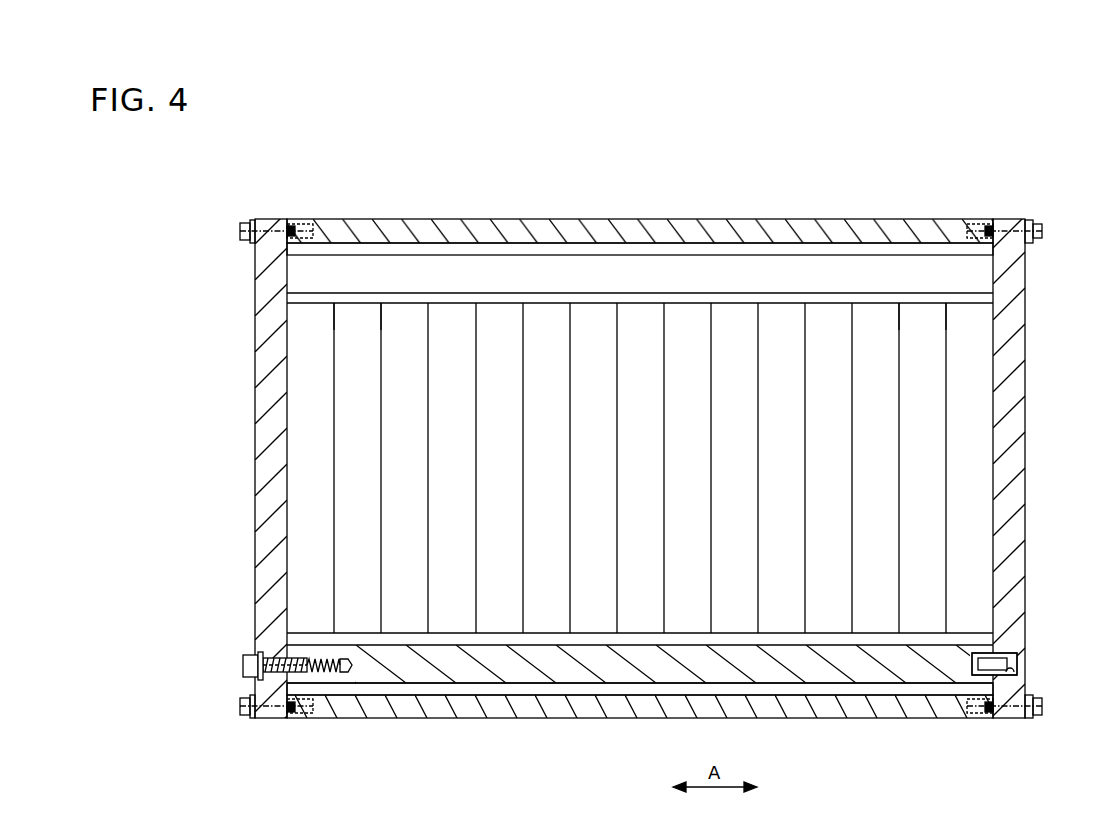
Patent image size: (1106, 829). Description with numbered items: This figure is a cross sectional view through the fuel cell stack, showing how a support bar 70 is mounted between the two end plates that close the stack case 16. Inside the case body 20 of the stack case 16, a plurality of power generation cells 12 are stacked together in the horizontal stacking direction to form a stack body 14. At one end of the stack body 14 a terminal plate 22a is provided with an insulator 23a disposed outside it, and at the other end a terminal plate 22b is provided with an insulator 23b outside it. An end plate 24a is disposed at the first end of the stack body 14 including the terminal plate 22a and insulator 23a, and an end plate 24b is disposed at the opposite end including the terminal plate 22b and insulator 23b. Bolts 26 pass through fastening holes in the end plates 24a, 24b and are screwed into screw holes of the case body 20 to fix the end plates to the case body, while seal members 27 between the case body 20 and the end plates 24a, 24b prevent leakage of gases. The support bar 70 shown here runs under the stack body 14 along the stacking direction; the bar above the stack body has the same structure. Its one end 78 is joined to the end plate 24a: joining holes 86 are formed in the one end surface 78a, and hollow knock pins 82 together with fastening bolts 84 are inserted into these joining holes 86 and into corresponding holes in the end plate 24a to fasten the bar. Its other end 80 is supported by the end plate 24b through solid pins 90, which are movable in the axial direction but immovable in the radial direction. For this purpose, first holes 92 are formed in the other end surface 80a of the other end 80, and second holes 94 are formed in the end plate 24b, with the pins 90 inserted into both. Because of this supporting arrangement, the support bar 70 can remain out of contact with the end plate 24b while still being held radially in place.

The power generation cell 12 is at (598, 322).
The stack body 14 is at (642, 292).
The stack case 16 is at (573, 428).
The case body 20 is at (933, 214).
The terminal plate 22a is at (357, 320).
The terminal plate 22b is at (923, 320).
The insulator 23a is at (313, 320).
The insulator 23b is at (968, 318).
The end plate 24a is at (270, 371).
The end plate 24b is at (1010, 374).
The bolt 26 is at (240, 228).
The seal member 27 is at (292, 714).
The support bar 70 is at (463, 243).
The one end 78 is at (279, 675).
The one end surface 78a is at (282, 653).
The other end 80 is at (1029, 644).
The other end surface 80a is at (1008, 653).
The hollow knock pin 82 is at (297, 655).
The fastening bolt 84 is at (243, 663).
The joining hole 86 is at (344, 673).
The solid pin 90 is at (1010, 662).
The first hole 92 is at (990, 653).
The second hole 94 is at (1016, 671).